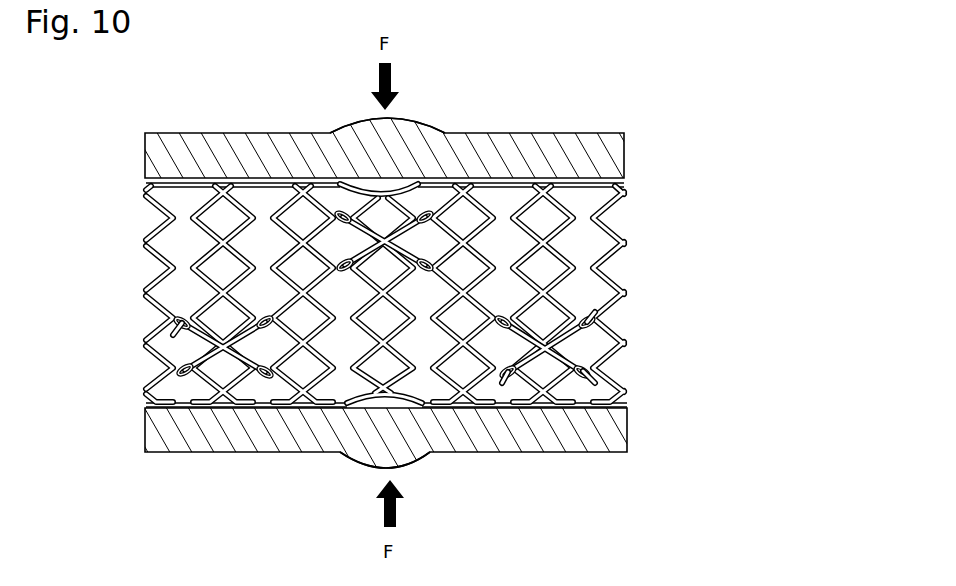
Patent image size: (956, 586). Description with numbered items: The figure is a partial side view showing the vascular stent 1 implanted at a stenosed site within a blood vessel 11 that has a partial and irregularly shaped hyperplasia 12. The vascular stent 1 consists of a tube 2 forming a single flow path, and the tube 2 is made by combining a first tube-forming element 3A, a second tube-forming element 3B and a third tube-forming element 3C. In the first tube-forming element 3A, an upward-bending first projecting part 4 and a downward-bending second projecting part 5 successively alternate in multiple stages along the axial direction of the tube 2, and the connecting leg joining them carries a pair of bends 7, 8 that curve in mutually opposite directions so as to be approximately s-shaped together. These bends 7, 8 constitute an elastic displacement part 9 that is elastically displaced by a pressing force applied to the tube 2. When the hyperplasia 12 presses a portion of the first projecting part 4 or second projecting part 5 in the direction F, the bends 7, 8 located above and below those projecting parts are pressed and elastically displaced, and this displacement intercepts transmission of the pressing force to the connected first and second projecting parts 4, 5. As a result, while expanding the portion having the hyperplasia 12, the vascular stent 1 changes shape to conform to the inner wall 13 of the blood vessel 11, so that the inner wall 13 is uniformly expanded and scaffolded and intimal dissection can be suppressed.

The vascular stent 1 is at (413, 292).
The tube 2 is at (387, 316).
The first tube-forming element 3A is at (308, 185).
The second tube-forming element 3B is at (227, 185).
The third tube-forming element 3C is at (474, 183).
The first projecting part 4 is at (327, 322).
The second projecting part 5 is at (358, 270).
The bend 7 is at (172, 336).
The bend 8 is at (176, 324).
The elastic displacement part 9 is at (387, 316).
The blood vessel having a stenosed site 11 is at (566, 150).
The hyperplasia 12 is at (407, 160).
The inner wall 13 is at (527, 180).